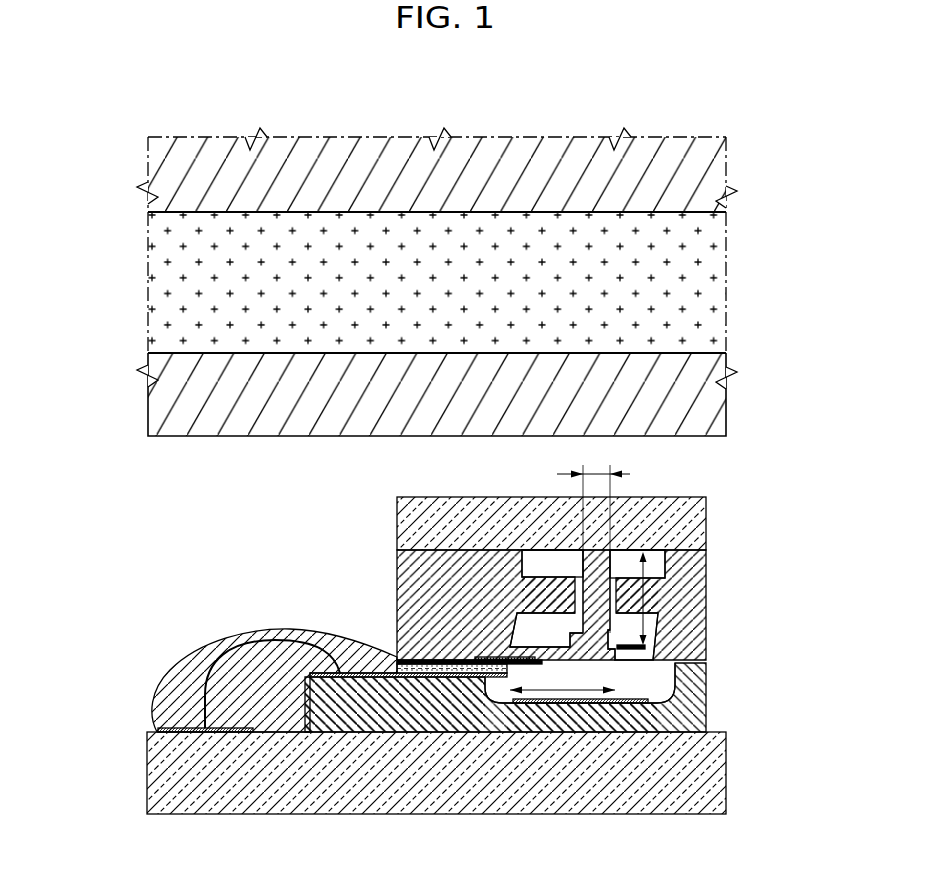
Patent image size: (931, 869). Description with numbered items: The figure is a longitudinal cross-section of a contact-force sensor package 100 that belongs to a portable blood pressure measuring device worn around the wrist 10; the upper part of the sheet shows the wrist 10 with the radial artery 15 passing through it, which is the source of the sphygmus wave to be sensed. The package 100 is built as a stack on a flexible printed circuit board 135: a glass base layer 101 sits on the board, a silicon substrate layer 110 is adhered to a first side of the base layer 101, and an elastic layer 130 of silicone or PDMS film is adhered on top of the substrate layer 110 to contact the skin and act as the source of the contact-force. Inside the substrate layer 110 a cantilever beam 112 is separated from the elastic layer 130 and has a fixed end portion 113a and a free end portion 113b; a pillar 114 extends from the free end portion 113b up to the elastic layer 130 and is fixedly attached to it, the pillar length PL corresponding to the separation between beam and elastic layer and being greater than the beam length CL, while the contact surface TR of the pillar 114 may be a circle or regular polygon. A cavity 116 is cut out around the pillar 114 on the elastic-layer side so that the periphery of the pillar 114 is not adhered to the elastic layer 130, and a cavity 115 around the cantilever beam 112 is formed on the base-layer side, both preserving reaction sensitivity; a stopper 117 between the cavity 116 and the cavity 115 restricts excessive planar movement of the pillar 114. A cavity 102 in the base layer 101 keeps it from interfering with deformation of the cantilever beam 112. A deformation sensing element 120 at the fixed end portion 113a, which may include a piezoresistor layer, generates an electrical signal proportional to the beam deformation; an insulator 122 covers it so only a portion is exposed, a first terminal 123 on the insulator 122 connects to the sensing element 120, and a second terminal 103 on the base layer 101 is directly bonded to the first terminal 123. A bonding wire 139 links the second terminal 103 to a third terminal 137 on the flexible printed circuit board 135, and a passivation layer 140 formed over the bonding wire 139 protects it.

The wrist 10 is at (158, 170).
The radial artery 15 is at (157, 267).
The contact-force sensor package 100 is at (152, 490).
The base layer 101 is at (698, 712).
The cavity 102 is at (650, 680).
The second terminal 103 is at (366, 700).
The substrate layer 110 is at (397, 558).
The cantilever beam 112 is at (609, 704).
The fixed end portion 113a is at (475, 678).
The free end portion 113b is at (637, 704).
The pillar 114 is at (597, 575).
The cavity 115 is at (655, 652).
The cavity 116 is at (545, 570).
The stopper 117 is at (538, 595).
The deformation sensing element 120 is at (488, 657).
The insulator 122 is at (512, 640).
The first terminal 123 is at (503, 661).
The elastic layer 130 is at (700, 518).
The flexible printed circuit board 135 is at (297, 800).
The third terminal 137 is at (186, 733).
The bonding wire 139 is at (268, 632).
The passivation layer 140 is at (182, 653).